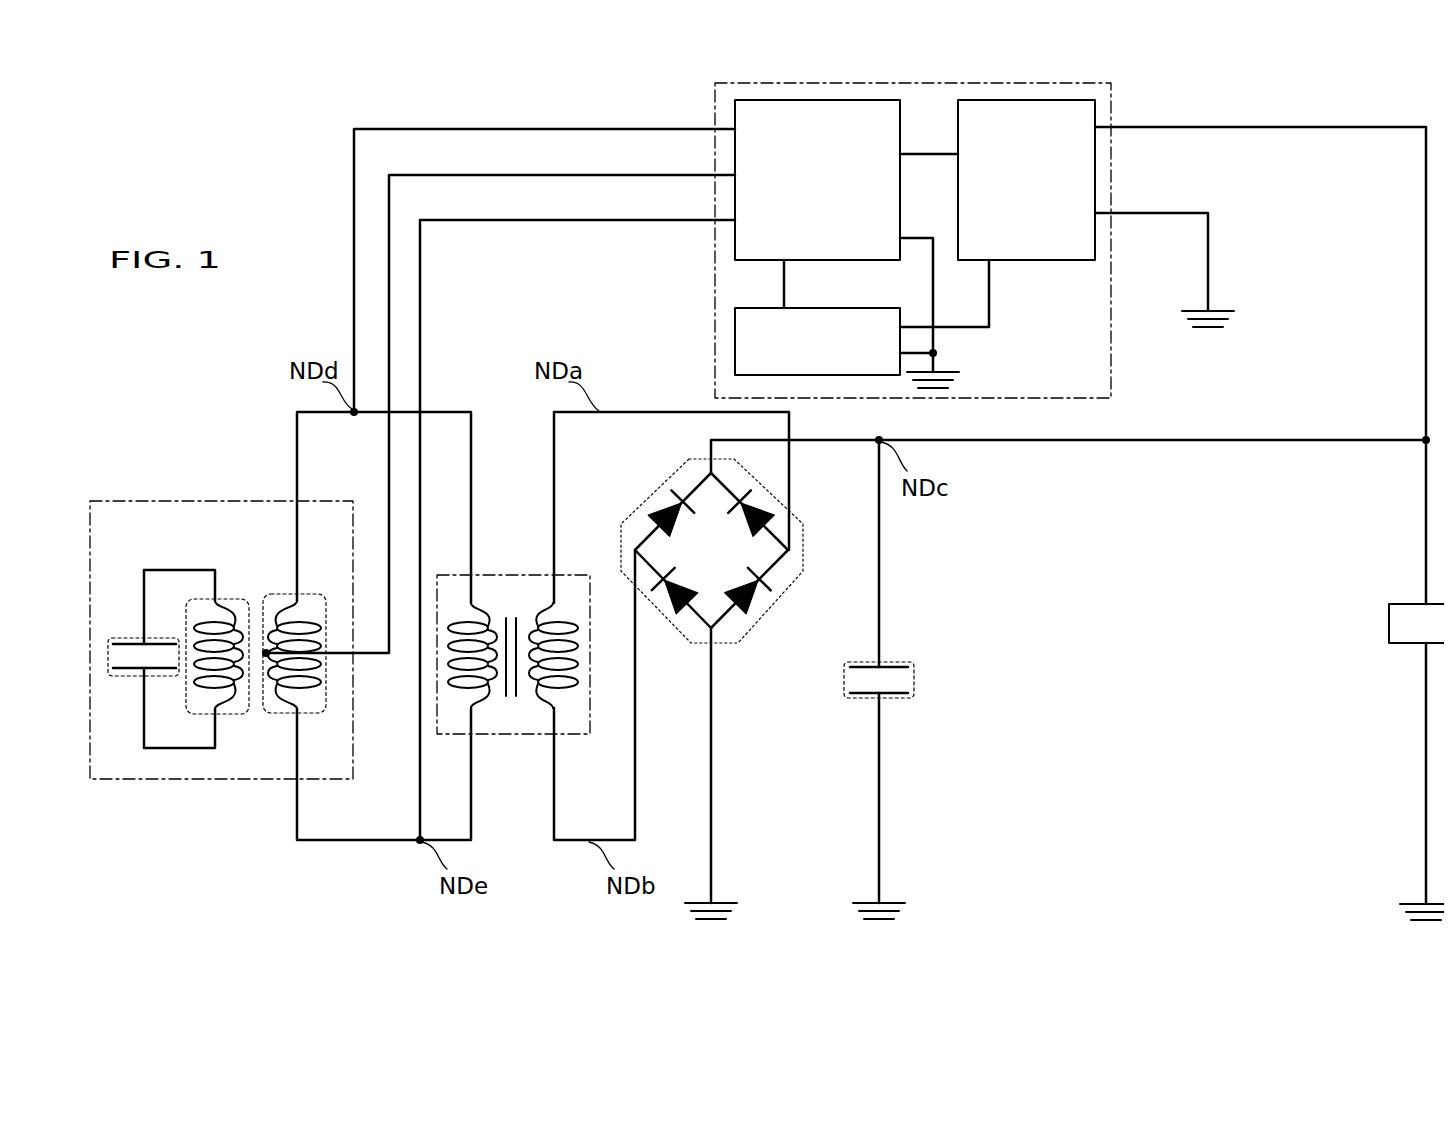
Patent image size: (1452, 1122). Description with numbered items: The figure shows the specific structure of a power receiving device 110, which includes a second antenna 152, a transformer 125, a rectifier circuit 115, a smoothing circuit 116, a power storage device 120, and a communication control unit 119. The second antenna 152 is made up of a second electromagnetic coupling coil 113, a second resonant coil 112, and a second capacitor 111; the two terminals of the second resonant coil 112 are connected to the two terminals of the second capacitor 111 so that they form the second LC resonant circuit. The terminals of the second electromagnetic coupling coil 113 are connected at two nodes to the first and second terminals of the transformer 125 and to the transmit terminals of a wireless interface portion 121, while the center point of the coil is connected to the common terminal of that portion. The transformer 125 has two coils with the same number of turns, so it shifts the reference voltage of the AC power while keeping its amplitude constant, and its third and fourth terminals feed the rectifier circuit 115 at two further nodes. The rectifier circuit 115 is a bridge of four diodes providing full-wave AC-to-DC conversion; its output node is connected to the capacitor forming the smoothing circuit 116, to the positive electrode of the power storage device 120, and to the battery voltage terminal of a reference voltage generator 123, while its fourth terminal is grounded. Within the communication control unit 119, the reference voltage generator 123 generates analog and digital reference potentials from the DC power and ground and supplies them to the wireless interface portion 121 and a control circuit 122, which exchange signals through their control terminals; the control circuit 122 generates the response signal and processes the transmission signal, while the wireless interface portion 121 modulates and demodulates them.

The power receiving device 110 is at (178, 75).
The second capacitor 111 is at (123, 637).
The second resonant coil 112 is at (228, 598).
The second electromagnetic coupling coil 113 is at (318, 593).
The rectifier circuit 115 is at (658, 607).
The smoothing circuit 116 is at (849, 661).
The communication control unit 119 is at (1110, 390).
The power storage device 120 is at (1388, 620).
The wireless interface portion 121 is at (816, 99).
The control circuit 122 is at (733, 340).
The reference voltage generator 123 is at (1027, 99).
The transformer 125 is at (500, 735).
The second antenna 152 is at (195, 779).